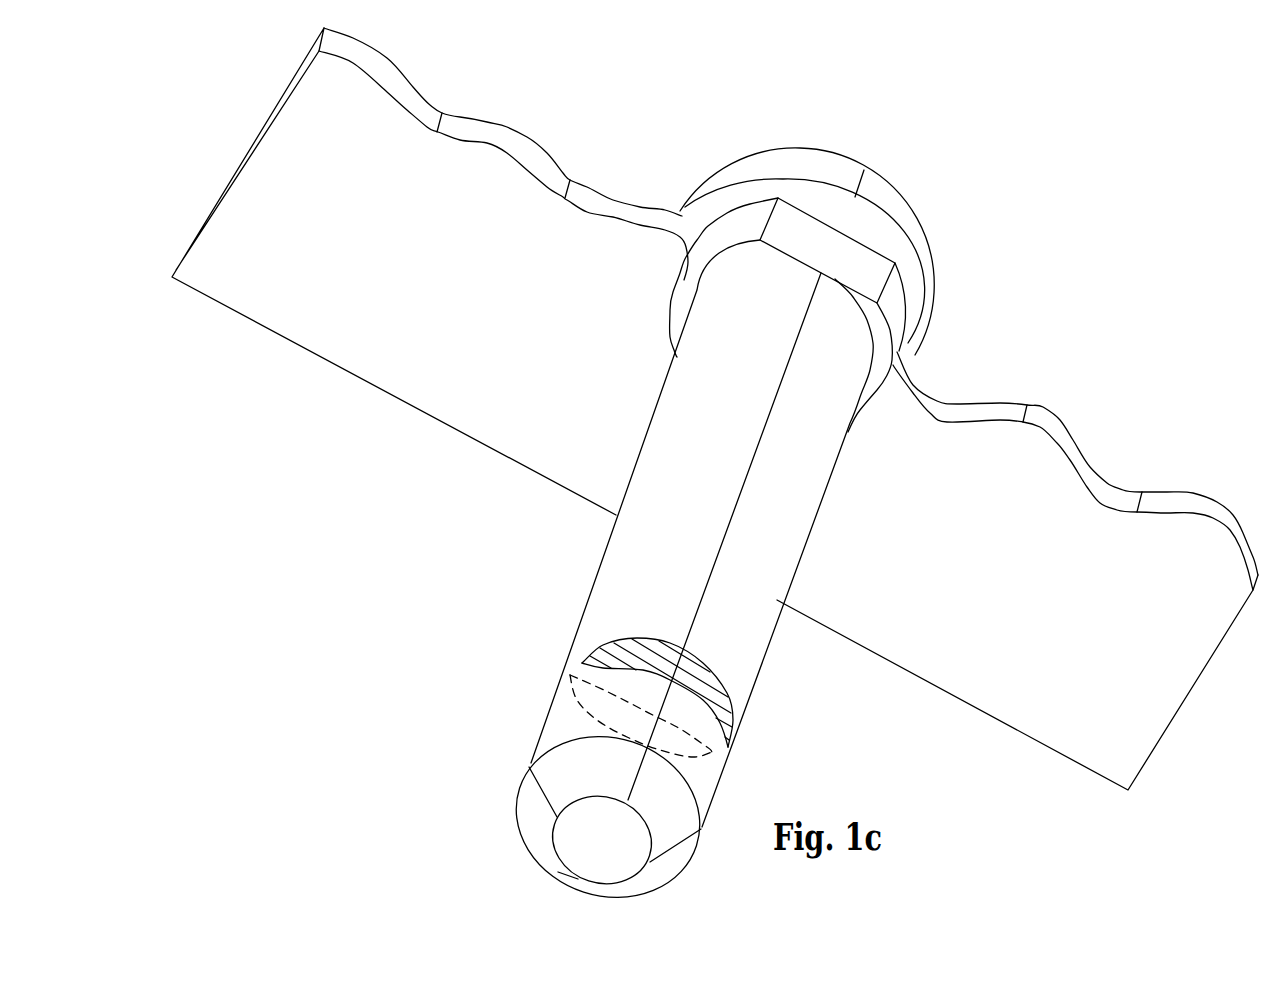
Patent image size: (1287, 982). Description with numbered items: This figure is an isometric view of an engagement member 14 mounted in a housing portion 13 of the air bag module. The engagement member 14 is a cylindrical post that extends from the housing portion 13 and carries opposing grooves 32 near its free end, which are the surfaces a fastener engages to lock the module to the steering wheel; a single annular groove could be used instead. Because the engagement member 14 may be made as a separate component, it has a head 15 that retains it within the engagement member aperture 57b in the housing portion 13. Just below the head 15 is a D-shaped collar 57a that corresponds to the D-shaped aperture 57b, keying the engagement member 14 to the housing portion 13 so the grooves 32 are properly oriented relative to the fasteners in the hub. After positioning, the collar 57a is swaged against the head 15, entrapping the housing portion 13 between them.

The housing portion 13 is at (497, 417).
The engagement member 14 is at (608, 605).
The head 15 is at (922, 256).
The grooves 32 is at (668, 640).
The D-shaped collar 57a is at (673, 310).
The D-shaped aperture 57b is at (880, 383).